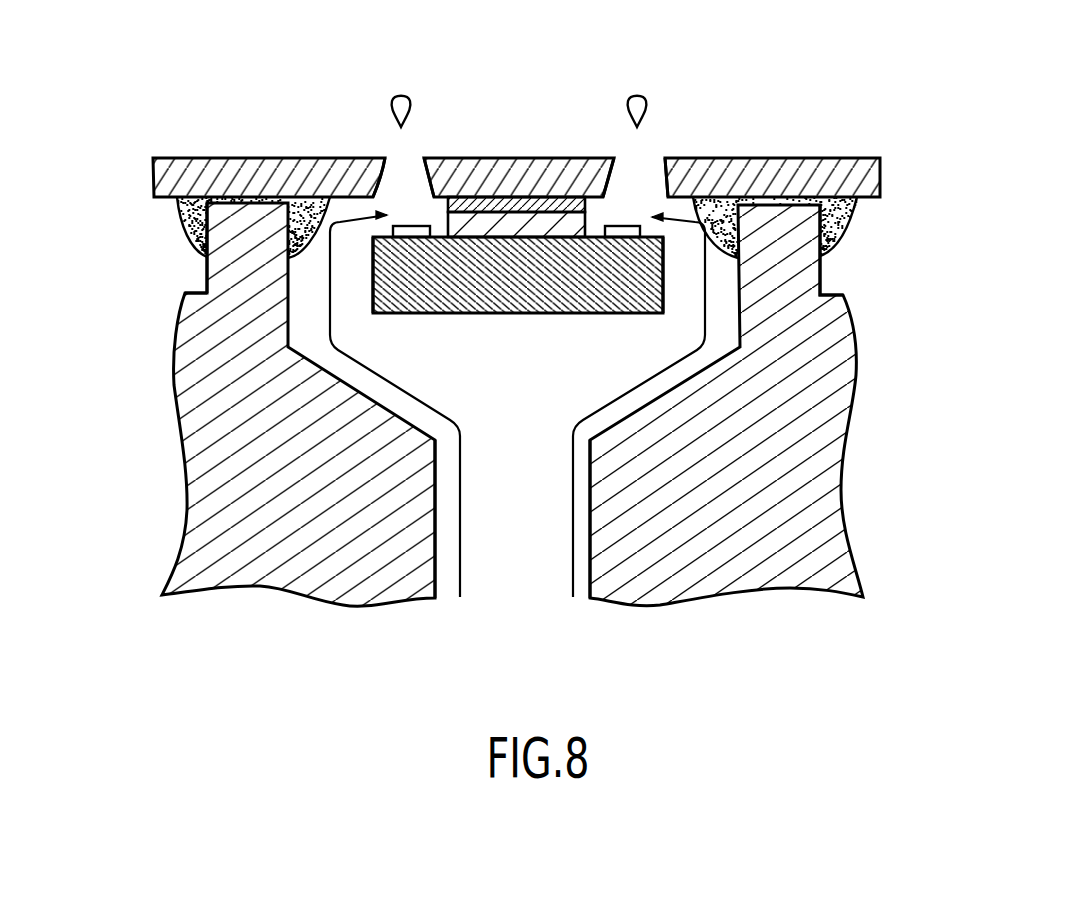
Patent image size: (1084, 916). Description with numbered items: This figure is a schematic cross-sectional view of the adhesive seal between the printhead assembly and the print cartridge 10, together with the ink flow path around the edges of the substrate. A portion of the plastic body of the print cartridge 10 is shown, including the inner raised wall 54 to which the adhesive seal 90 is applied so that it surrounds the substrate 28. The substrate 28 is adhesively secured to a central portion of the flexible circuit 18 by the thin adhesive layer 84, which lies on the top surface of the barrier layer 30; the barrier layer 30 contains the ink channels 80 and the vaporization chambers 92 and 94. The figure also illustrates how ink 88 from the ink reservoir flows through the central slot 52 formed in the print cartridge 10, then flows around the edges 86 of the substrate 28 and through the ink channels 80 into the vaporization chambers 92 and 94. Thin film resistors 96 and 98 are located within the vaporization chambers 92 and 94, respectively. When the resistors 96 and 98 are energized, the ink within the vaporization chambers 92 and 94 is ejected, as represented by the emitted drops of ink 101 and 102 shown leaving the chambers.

The print cartridge 10 is at (890, 435).
The flexible circuit 18 is at (578, 172).
The substrate 28 is at (522, 305).
The barrier layer 30 is at (530, 227).
The central slot 52 is at (522, 623).
The inner raised wall 54 is at (243, 235).
The ink channels 80 is at (385, 240).
The thin adhesive layer 84 is at (500, 210).
The edges of the substrate 86 is at (373, 273).
The ink 88 is at (386, 378).
The adhesive seal 90 is at (180, 207).
The vaporization chamber 92 is at (425, 158).
The vaporization chamber 94 is at (656, 158).
The thin film resistor 96 is at (401, 226).
The thin film resistor 98 is at (634, 226).
The emitted drop of ink 101 is at (401, 95).
The emitted drop of ink 102 is at (637, 95).